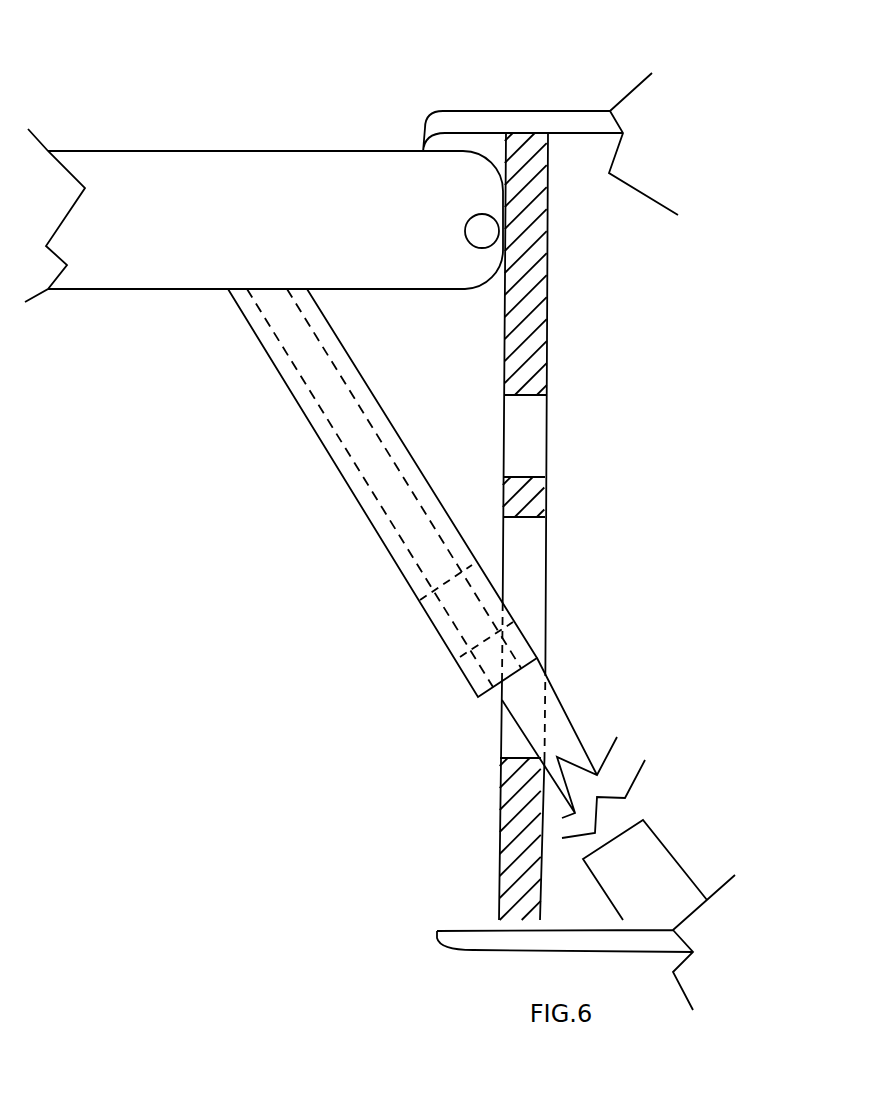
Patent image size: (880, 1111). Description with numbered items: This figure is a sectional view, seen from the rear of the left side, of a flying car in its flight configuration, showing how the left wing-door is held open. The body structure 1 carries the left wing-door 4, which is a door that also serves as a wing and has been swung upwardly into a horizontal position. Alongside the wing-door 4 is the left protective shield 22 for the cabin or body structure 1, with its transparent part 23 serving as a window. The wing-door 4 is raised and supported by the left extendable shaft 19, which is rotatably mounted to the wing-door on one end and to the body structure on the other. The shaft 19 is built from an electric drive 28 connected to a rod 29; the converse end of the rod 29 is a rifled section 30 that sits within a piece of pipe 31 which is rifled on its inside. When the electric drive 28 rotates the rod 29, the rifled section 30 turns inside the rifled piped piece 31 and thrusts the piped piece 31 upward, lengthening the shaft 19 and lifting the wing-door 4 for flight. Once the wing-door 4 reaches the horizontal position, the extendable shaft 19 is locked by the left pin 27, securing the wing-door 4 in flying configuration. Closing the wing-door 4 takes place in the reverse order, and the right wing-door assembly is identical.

The body structure 1 is at (443, 110).
The left wing-door 4 is at (107, 170).
The left pin 27 is at (484, 232).
The left protective shield 22 is at (545, 335).
The transparent part 23 is at (523, 435).
The left extendable shaft 19 is at (240, 312).
The piped piece 31 is at (342, 443).
The rifled section 30 is at (477, 620).
The rod 29 is at (563, 718).
The electric drive 28 is at (655, 833).